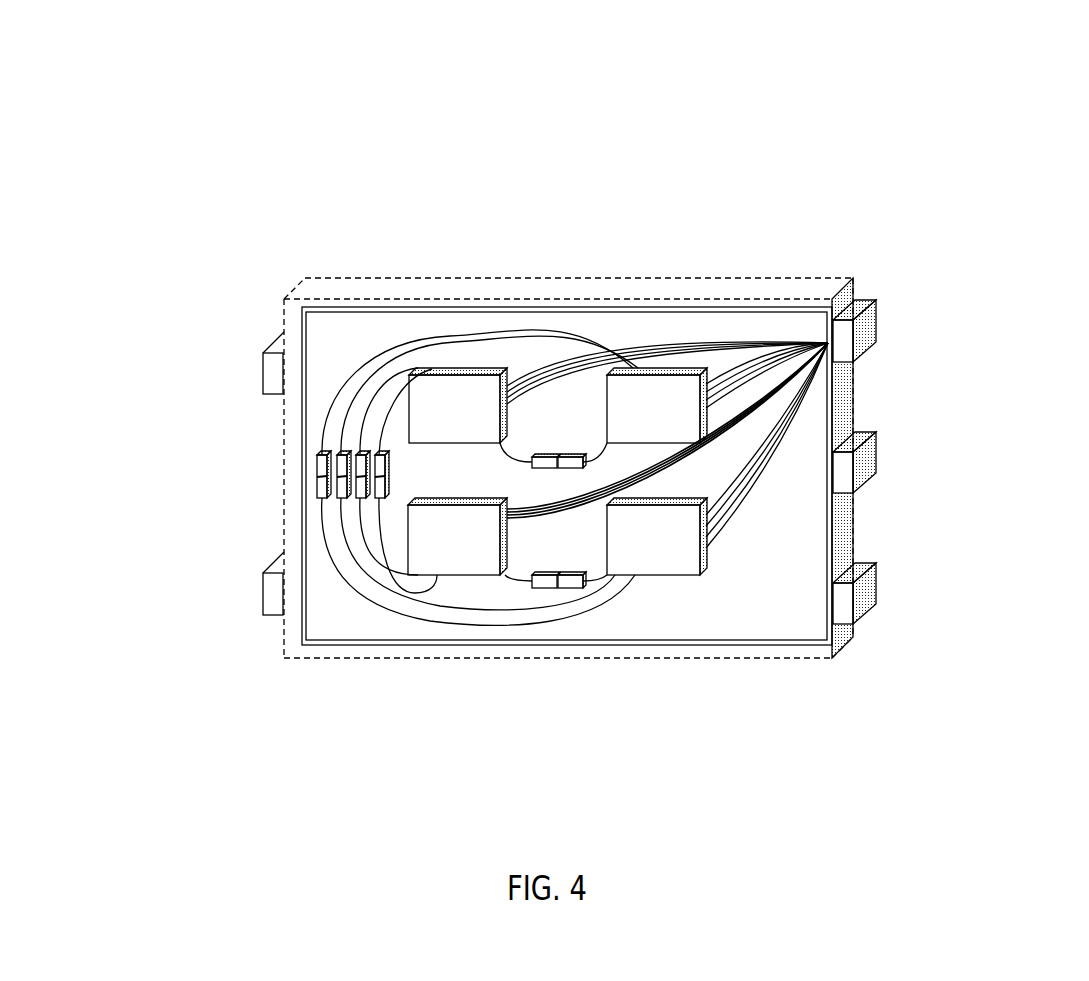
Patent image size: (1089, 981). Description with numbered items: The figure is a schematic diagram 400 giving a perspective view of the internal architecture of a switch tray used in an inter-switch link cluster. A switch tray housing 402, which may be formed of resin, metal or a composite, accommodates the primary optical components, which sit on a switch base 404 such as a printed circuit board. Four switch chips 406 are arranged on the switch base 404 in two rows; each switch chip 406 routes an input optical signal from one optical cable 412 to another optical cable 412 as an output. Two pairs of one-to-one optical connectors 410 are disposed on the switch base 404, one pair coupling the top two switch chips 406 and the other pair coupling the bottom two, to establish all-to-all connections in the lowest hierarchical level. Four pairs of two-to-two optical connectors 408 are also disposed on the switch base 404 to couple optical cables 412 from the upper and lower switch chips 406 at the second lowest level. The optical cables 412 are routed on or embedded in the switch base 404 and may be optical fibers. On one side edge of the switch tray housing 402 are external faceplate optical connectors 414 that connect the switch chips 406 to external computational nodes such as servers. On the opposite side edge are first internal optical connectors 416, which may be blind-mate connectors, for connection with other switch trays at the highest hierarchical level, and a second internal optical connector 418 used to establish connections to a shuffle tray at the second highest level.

The schematic diagram 400 is at (994, 90).
The switch tray housing 402 is at (340, 287).
The switch base 404 is at (340, 622).
The switch chip 406 is at (454, 369).
The 2-to-2 optical connector 408 is at (317, 465).
The 1-to-1 optical connector 410 is at (573, 456).
The optical cable 412 is at (708, 347).
The external faceplate optical connector 414 is at (260, 372).
The first internal optical connector 416 is at (860, 457).
The second internal optical connector 418 is at (860, 332).